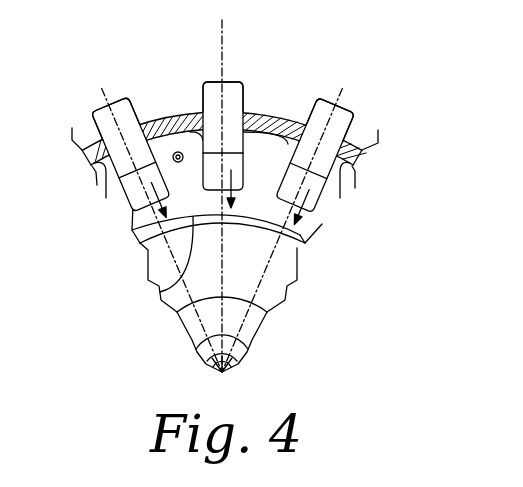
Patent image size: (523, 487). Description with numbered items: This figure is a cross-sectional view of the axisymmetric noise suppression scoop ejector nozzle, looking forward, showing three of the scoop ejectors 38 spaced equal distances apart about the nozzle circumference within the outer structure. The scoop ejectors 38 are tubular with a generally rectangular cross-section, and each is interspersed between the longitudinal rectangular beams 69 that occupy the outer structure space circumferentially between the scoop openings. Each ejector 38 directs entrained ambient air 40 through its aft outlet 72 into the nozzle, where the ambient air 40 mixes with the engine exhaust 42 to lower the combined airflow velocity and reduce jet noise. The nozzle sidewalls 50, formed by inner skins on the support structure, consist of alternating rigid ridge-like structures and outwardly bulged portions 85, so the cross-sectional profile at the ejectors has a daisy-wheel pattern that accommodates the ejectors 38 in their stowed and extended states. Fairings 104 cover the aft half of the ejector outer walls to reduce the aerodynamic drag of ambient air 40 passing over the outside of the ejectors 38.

The scoop ejector 38 is at (358, 106).
The ambient air 40 is at (133, 205).
The engine exhaust 42 is at (173, 117).
The nozzle sidewall 50 is at (106, 198).
The rectangular beam 69 is at (150, 118).
The aft outlet 72 is at (161, 292).
The outwardly bulged portion 85 is at (291, 128).
The fairing 104 is at (101, 106).